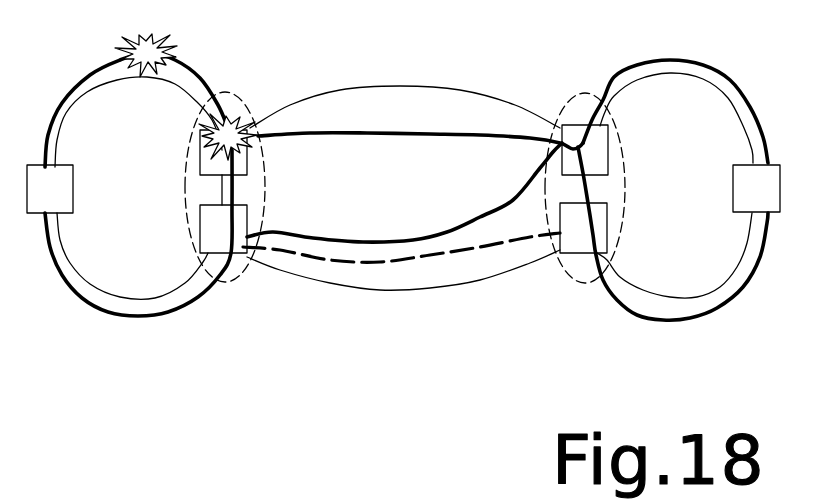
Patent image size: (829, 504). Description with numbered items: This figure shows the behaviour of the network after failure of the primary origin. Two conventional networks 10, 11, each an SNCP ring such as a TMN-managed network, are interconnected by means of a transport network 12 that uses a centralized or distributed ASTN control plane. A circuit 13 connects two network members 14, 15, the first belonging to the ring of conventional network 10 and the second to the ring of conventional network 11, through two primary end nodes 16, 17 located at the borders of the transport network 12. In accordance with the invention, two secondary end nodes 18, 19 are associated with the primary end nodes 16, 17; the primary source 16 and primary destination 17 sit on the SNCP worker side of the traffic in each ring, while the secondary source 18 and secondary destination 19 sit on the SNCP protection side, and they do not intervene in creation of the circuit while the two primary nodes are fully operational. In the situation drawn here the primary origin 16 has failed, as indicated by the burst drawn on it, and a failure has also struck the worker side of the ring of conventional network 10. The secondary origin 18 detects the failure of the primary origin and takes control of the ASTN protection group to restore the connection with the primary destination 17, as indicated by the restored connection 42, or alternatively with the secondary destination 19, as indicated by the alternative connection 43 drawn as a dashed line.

The conventional network 10 is at (137, 293).
The conventional network 11 is at (660, 290).
The transport network 12 is at (423, 287).
The circuit 13 is at (363, 131).
The network member 14 is at (33, 210).
The network member 15 is at (767, 210).
The primary end node 16 is at (233, 113).
The primary end node 17 is at (580, 128).
The secondary end node 18 is at (229, 253).
The secondary end node 19 is at (584, 248).
The restored connection with primary destination 42 is at (475, 225).
The alternative restored connection with secondary destination 43 is at (316, 258).